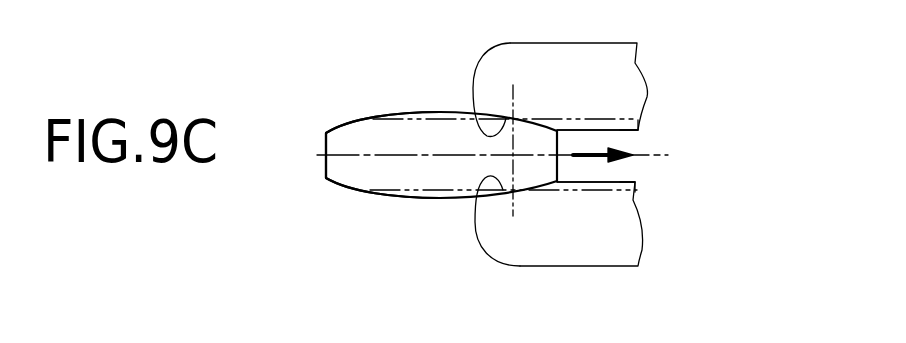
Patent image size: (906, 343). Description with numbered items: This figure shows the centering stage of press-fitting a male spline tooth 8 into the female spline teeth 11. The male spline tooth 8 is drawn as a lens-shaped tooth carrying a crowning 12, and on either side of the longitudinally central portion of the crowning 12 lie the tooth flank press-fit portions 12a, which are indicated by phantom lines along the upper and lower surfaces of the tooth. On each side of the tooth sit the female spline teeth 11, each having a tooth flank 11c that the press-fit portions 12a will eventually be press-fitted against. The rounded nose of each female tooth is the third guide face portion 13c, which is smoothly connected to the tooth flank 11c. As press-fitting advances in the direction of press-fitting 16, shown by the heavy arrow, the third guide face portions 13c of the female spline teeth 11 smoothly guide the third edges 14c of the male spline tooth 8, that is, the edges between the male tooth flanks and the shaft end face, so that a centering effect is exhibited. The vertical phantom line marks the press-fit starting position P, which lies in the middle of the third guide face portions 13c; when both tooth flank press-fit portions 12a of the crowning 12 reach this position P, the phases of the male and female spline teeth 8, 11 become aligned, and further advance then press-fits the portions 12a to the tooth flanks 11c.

The male spline teeth 8 is at (352, 130).
The crowning 12 is at (368, 208).
The tooth flank press-fit portion 12a is at (427, 113).
The female spline teeth 11 is at (625, 72).
The tooth flank 11c is at (624, 133).
The third guide face portion 13c is at (462, 115).
The third edge 14c is at (557, 130).
The direction of press-fitting 16 is at (595, 147).
The press-fit starting position P is at (526, 137).